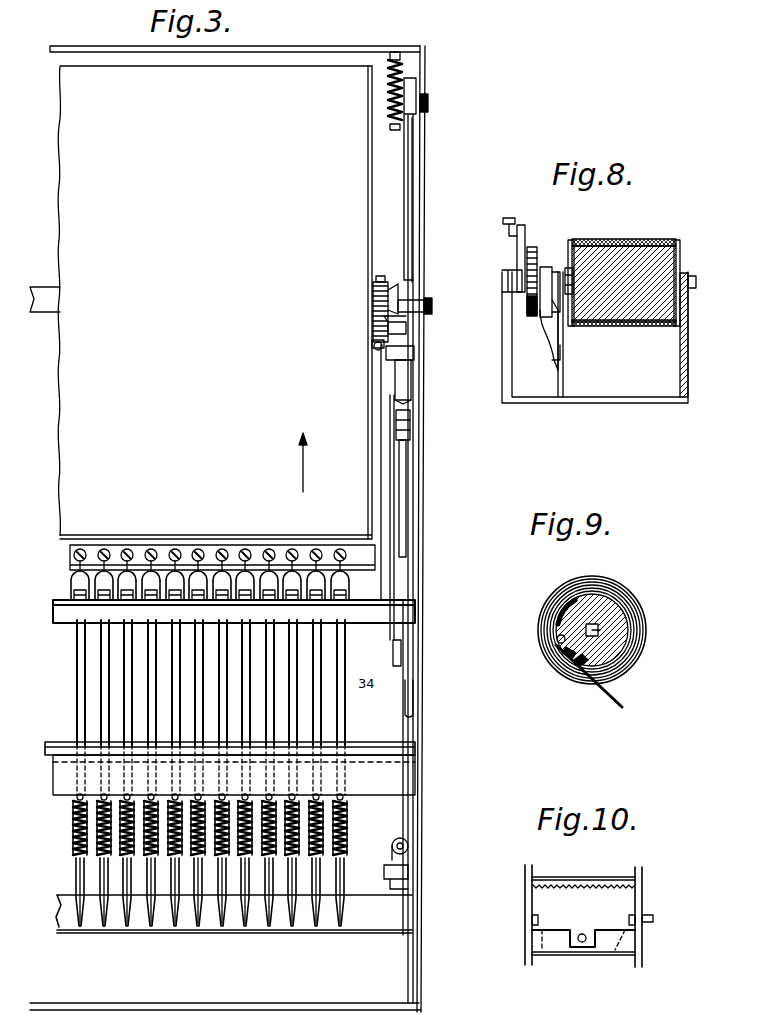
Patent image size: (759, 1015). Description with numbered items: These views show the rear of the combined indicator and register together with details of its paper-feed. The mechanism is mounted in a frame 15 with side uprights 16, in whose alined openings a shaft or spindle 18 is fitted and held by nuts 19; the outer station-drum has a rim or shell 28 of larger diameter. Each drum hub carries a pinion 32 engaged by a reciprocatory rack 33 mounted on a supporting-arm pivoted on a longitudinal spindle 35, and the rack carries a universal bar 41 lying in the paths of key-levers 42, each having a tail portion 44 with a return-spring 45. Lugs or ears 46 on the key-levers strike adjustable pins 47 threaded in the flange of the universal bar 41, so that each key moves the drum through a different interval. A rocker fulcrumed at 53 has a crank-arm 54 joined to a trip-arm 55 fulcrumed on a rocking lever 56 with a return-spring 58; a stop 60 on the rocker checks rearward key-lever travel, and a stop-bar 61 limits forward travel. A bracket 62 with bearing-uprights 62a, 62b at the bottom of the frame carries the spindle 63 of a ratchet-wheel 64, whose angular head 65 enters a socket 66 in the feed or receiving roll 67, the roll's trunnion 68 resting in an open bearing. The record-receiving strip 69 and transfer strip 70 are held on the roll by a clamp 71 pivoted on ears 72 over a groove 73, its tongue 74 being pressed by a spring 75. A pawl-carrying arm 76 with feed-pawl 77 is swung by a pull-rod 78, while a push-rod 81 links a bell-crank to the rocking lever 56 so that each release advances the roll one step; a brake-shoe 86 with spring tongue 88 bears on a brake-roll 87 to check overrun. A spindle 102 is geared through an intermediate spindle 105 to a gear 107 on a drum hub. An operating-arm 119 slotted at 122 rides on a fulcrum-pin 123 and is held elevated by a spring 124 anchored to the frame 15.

In FIG. 3, the frame 15 is at (296, 52).
In FIG. 3, the side uprights 16 is at (414, 196).
In FIG. 3, the shaft or spindle 18 is at (424, 300).
In FIG. 3, the nuts 19 is at (432, 308).
In FIG. 3, the rim or shell 28 is at (60, 140).
In FIG. 3, the pinion 32 is at (382, 276).
In FIG. 3, the reciprocatory rack 33 is at (372, 344).
In FIG. 3, the spindle 35 is at (395, 936).
In FIG. 3, the universal bar 41 is at (356, 560).
In FIG. 3, the key-levers 42 is at (76, 692).
In FIG. 3, the extension or tail portion 44 is at (74, 885).
In FIG. 3, the return-spring 45 is at (74, 815).
In FIG. 3, the lugs or ears 46 is at (269, 555).
In FIG. 3, the adjustable pins 47 is at (178, 555).
In FIG. 3, the fulcrum 53 is at (414, 568).
In FIG. 3, the crank-arm 54 is at (406, 473).
In FIG. 3, the trip-arm 55 is at (401, 652).
In FIG. 3, the rocking lever 56 is at (413, 700).
In FIG. 3, the return-spring 58 is at (408, 843).
In FIG. 3, the stop 60 is at (74, 618).
In FIG. 3, the stop-bar 61 is at (46, 745).
In FIG. 8, the bracket 62 is at (578, 398).
In FIG. 8, the bearing-upright 62a is at (560, 340).
In FIG. 8, the bearing-upright 62b is at (688, 355).
In FIG. 8, the spindle 63 is at (502, 284).
In FIG. 8, the ratchet-wheel 64 is at (531, 316).
In FIG. 8, the squared or angular head 65 is at (566, 268).
In FIG. 9, the squared or angular head 65 is at (600, 630).
In FIG. 8, the squared or angular socket 66 is at (600, 326).
In FIG. 8, the feed or receiving roll 67 is at (655, 310).
In FIG. 9, the feed or receiving roll 67 is at (612, 616).
In FIG. 8, the trunnion 68 is at (696, 282).
In FIG. 8, the record-receiving strip 69 is at (650, 240).
In FIG. 9, the record-receiving strip 69 is at (595, 686).
In FIG. 9, the transfer strip or ribbon 70 is at (618, 702).
In FIG. 10, the clamp 71 is at (622, 906).
In FIG. 9, the ears 72 is at (557, 641).
In FIG. 10, the ears 72 is at (542, 951).
In FIG. 9, the longitudinal channel or groove 73 is at (578, 600).
In FIG. 9, the tongue 74 is at (566, 653).
In FIG. 9, the spring 75 is at (577, 667).
In FIG. 8, the pawl-carrying arm 76 is at (517, 258).
In FIG. 8, the feed-pawl 77 is at (531, 247).
In FIG. 8, the pull-rod 78 is at (507, 218).
In FIG. 3, the push-rod 81 is at (408, 884).
In FIG. 8, the brake-shoe 86 is at (542, 330).
In FIG. 8, the brake-roll 87 is at (545, 267).
In FIG. 8, the spring tongue 88 is at (556, 362).
In FIG. 3, the spindle 102 is at (398, 289).
In FIG. 3, the spindle 105 is at (406, 379).
In FIG. 3, the gear 107 is at (406, 328).
In FIG. 3, the operating-arm 119 is at (404, 192).
In FIG. 3, the slot 122 is at (417, 92).
In FIG. 3, the fulcrum-pin 123 is at (428, 105).
In FIG. 3, the spring 124 is at (402, 72).